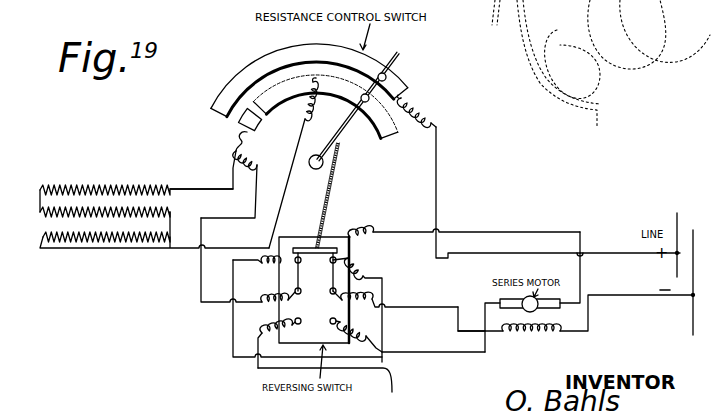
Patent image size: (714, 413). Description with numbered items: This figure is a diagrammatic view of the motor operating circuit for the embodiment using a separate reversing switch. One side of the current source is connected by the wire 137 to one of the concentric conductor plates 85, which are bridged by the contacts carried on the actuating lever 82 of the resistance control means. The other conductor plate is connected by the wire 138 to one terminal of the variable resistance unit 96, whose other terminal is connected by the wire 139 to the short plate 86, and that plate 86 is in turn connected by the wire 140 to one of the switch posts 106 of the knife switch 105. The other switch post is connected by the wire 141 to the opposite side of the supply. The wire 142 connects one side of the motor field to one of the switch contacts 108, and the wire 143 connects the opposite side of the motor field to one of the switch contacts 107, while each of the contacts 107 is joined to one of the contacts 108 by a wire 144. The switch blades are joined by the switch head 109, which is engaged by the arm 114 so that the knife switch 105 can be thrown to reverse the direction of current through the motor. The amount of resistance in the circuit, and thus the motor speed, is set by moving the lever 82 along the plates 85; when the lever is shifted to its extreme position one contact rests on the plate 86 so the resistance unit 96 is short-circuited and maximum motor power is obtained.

The actuating lever 82 is at (393, 68).
The concentric conductor plates 85 is at (272, 93).
The short plate 86 is at (232, 143).
The variable resistance unit 96 is at (133, 212).
The knife switch 105 is at (381, 310).
The switch posts 106 is at (330, 294).
The circuit closing contacts 107 is at (336, 321).
The circuit closing contacts 108 is at (330, 262).
The switch head 109 is at (436, 232).
The arm 114 is at (326, 210).
The wire 137 is at (436, 192).
The wire 138 is at (293, 163).
The wire 139 is at (220, 191).
The wire 140 is at (205, 303).
The wire 141 is at (467, 333).
The wire 142 is at (499, 232).
The wire 143 is at (425, 353).
The wire 144 is at (249, 359).